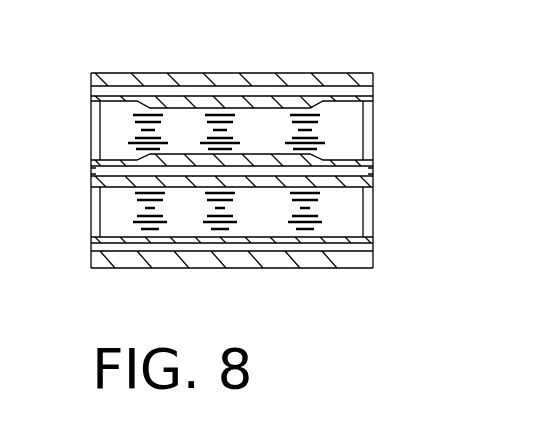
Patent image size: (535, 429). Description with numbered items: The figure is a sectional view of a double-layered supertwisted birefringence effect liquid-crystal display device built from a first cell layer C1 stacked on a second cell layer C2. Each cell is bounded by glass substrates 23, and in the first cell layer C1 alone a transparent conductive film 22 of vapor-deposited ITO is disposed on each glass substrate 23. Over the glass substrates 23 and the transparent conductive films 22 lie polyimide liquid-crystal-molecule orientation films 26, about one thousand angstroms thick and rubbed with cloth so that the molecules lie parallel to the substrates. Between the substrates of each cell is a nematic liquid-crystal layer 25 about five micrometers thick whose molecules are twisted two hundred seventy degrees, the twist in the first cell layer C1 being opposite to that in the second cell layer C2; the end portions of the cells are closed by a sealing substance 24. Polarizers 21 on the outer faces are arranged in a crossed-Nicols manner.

The polarizer 21 is at (373, 80).
The transparent conductive film 22 is at (275, 97).
The glass substrate 23 is at (373, 97).
The sealing substance 24 is at (376, 140).
The liquid-crystal layer 25 is at (107, 128).
The liquid-crystal-molecule orientation film 26 is at (92, 168).
The first cell layer C1 is at (352, 73).
The second cell layer C2 is at (315, 269).